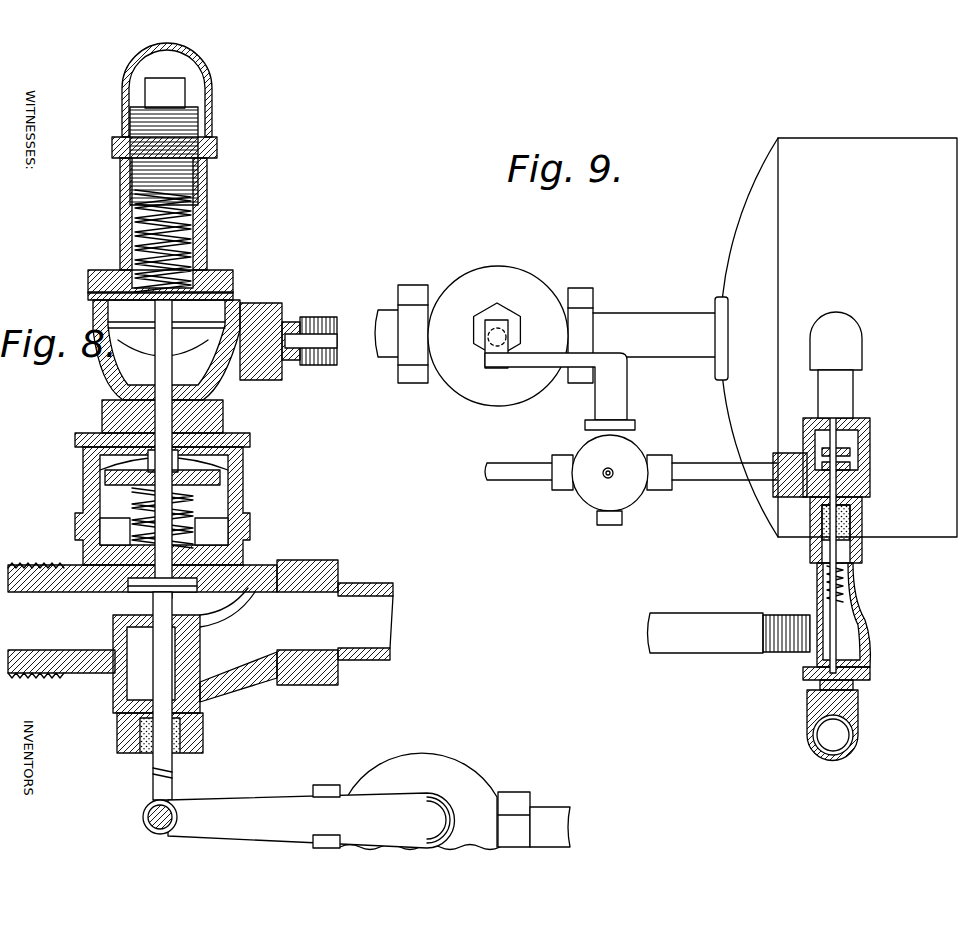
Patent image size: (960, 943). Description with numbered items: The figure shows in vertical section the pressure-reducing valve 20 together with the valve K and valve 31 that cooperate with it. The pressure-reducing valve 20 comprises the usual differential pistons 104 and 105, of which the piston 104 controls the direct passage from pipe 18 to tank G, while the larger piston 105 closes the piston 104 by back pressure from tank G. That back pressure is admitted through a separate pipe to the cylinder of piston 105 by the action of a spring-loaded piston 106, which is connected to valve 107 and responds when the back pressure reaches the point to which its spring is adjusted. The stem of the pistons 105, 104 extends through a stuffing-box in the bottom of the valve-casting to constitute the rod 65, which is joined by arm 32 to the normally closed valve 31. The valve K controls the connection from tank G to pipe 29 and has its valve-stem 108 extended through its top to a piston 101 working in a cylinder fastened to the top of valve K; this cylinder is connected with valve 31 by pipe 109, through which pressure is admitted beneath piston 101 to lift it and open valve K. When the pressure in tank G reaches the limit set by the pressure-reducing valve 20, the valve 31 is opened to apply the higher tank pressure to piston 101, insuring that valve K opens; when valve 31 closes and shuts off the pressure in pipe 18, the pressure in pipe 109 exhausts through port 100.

In FIG. 8, the pipe 18 is at (23, 567).
In FIG. 9, the pipe 18 is at (386, 316).
In FIG. 8, the pressure-reducing valve 20 is at (189, 499).
In FIG. 9, the pressure-reducing valve 20 is at (470, 278).
In FIG. 9, the pipe 29 is at (692, 617).
In FIG. 8, the valve 31 is at (430, 763).
In FIG. 9, the valve 31 is at (630, 500).
In FIG. 8, the arm 32 is at (298, 816).
In FIG. 9, the arm 32 is at (548, 372).
In FIG. 8, the rod 65 is at (167, 768).
In FIG. 9, the port 100 is at (615, 470).
In FIG. 9, the piston 101 is at (852, 462).
In FIG. 8, the differential piston 104 is at (143, 588).
In FIG. 8, the differential piston 105 is at (217, 510).
In FIG. 8, the piston 106 is at (125, 330).
In FIG. 8, the valve 107 is at (167, 352).
In FIG. 9, the valve-stem 108 is at (868, 527).
In FIG. 8, the pipe 109 is at (550, 812).
In FIG. 9, the pipe 109 is at (720, 481).
In FIG. 9, the tank G is at (838, 337).
In FIG. 9, the valve K is at (866, 606).